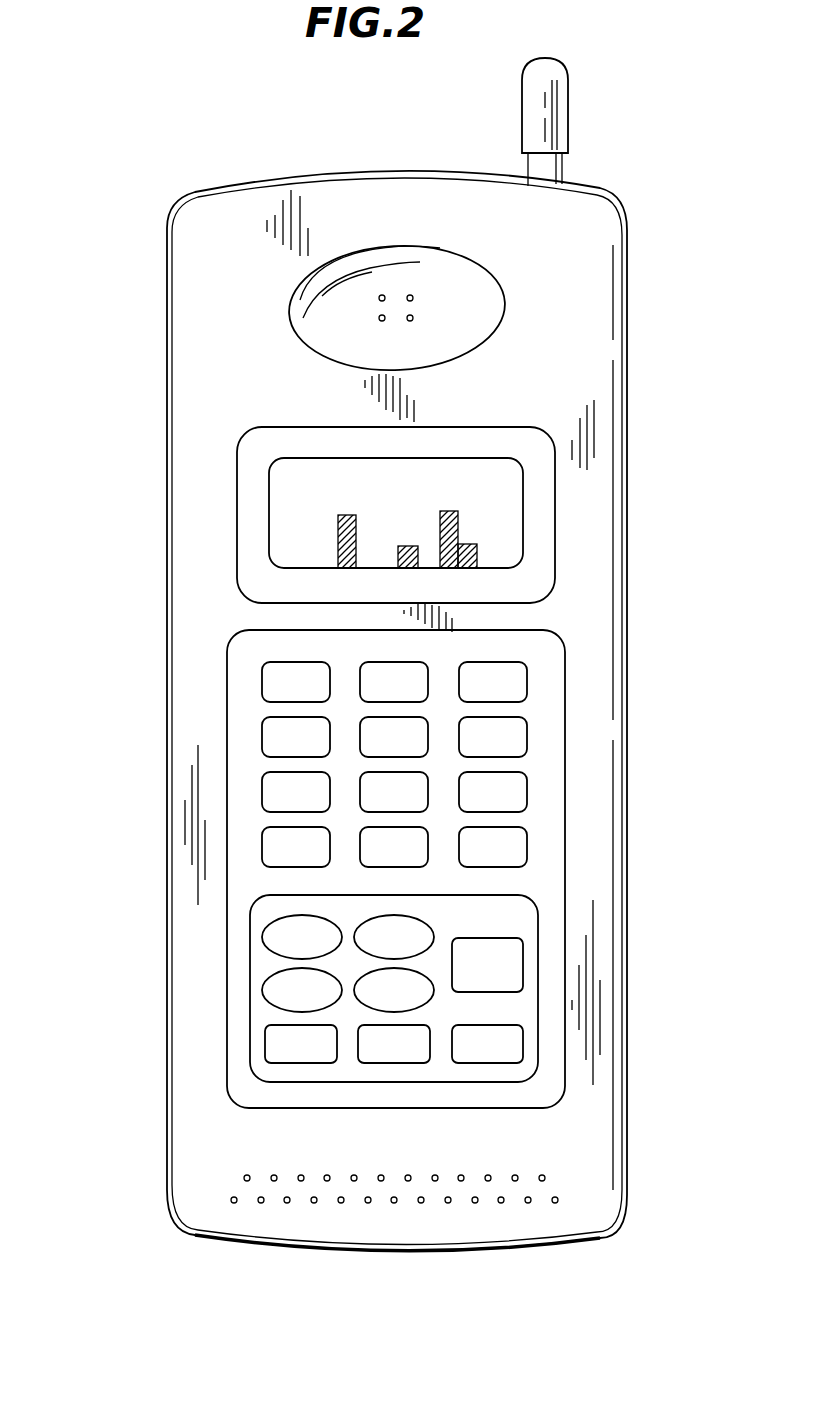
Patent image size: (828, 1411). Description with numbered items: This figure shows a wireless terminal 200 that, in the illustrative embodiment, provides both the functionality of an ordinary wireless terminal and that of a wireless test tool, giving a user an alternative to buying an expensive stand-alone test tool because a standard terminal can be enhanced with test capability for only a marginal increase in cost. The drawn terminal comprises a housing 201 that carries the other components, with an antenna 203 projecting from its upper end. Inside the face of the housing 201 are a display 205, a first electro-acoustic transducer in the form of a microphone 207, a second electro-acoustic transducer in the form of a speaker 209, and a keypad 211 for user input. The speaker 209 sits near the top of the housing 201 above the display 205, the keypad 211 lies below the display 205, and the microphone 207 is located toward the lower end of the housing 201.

The wireless terminal 200 is at (98, 175).
The housing 201 is at (627, 895).
The antenna 203 is at (568, 108).
The display 205 is at (523, 508).
The microphone 207 is at (506, 1205).
The speaker 209 is at (497, 337).
The keypad 211 is at (553, 795).